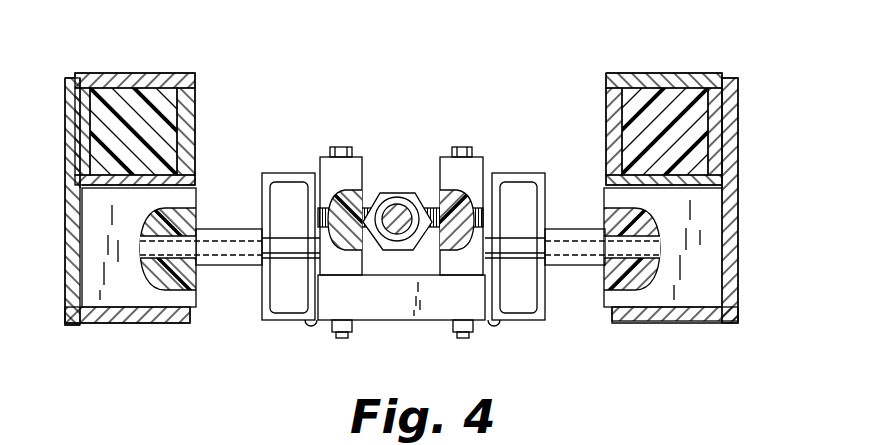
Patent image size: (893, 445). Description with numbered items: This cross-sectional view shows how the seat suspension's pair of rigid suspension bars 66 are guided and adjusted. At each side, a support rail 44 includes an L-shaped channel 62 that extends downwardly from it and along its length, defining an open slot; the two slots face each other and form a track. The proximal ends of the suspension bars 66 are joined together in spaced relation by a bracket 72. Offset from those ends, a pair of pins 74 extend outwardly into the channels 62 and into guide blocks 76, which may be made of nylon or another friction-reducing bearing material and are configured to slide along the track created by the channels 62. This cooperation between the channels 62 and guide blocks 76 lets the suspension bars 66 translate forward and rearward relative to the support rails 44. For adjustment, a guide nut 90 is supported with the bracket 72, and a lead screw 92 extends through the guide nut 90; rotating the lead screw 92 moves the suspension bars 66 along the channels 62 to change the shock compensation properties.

The support rail 44 is at (110, 73).
The L-shaped channel 62 is at (66, 320).
The guide block 76 is at (128, 275).
The pin 74 is at (228, 229).
The suspension bar 66 is at (262, 305).
The bracket 72 is at (378, 300).
The guide nut 90 is at (408, 193).
The lead screw 92 is at (390, 195).